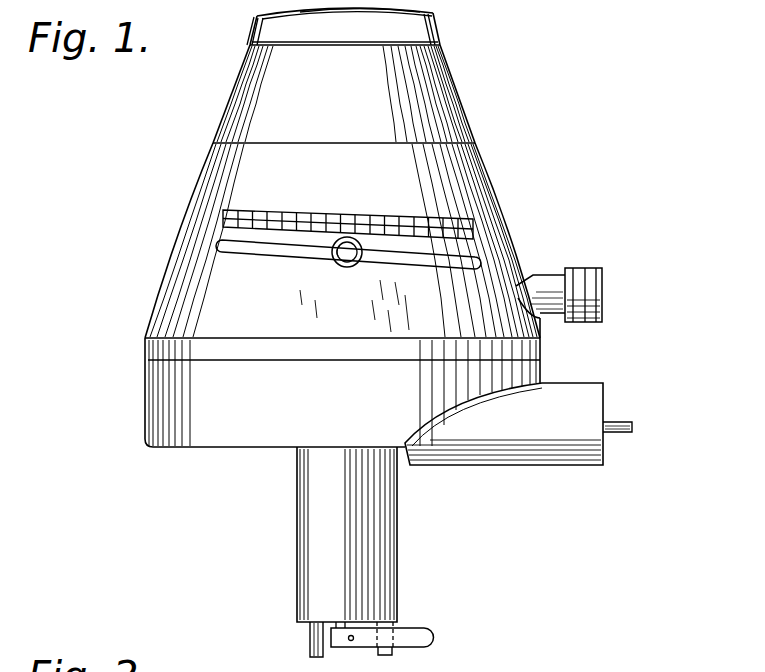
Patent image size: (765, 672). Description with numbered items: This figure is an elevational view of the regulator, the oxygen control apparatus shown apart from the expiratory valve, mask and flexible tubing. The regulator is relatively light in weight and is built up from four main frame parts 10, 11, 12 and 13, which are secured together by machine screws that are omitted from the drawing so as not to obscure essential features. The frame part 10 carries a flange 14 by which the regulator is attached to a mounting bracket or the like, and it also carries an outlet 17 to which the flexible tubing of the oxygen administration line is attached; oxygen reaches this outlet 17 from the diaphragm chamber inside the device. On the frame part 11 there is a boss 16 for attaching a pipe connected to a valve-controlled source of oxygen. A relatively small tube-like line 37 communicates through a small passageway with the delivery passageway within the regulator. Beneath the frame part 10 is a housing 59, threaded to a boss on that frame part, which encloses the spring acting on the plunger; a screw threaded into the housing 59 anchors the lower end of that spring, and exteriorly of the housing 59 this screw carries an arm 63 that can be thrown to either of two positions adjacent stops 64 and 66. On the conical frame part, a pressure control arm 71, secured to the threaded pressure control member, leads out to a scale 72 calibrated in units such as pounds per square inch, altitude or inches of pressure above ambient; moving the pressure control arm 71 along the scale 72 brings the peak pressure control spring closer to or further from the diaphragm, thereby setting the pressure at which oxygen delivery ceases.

The frame part 10 is at (162, 412).
The frame part 11 is at (170, 297).
The frame part 12 is at (438, 103).
The frame part 13 is at (440, 31).
The flange 14 is at (542, 665).
The boss 16 is at (583, 277).
The outlet 17 is at (590, 397).
The line 37 is at (634, 428).
The housing 59 is at (305, 582).
The arm 63 is at (419, 633).
The stop 64 is at (309, 642).
The stop 66 is at (383, 656).
The pressure control arm 71 is at (341, 268).
The scale 72 is at (305, 208).